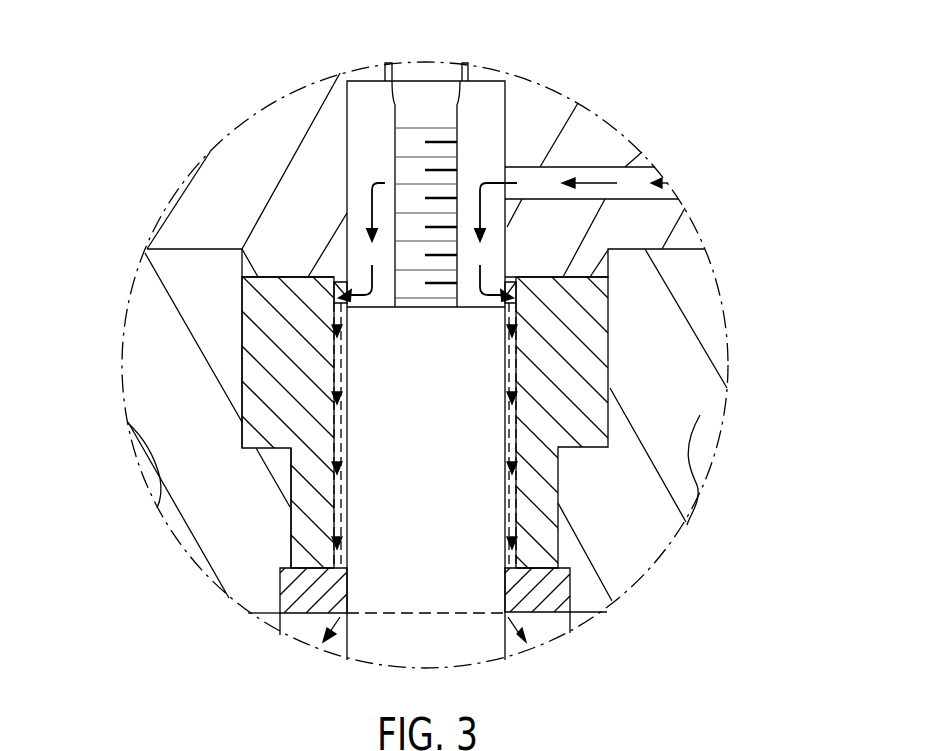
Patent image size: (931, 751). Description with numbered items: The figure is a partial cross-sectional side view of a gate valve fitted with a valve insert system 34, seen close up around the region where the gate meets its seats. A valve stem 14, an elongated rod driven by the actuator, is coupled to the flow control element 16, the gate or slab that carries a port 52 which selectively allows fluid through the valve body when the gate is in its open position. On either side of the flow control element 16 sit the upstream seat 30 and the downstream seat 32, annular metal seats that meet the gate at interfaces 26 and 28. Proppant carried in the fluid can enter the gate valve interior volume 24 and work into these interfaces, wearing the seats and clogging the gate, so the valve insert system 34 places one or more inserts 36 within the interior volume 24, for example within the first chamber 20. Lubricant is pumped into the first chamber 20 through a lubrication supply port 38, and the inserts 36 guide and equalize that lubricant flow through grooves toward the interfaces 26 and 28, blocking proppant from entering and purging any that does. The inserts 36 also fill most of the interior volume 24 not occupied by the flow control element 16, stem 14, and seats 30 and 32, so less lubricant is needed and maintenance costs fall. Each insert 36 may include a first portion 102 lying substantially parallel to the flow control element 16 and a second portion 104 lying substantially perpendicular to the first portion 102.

The valve stem 14 is at (417, 95).
The flow control element 16 is at (432, 362).
The first chamber 20 is at (367, 147).
The gate valve interior volume 24 is at (293, 210).
The interface 26 is at (345, 590).
The interface 28 is at (505, 590).
The upstream seat 30 is at (305, 605).
The downstream seat 32 is at (545, 603).
The valve insert system 34 is at (745, 357).
The insert 36 is at (262, 382).
The lubrication supply port 38 is at (635, 183).
The port 52 is at (432, 650).
The first portion 102 is at (302, 525).
The second portion 104 is at (255, 335).